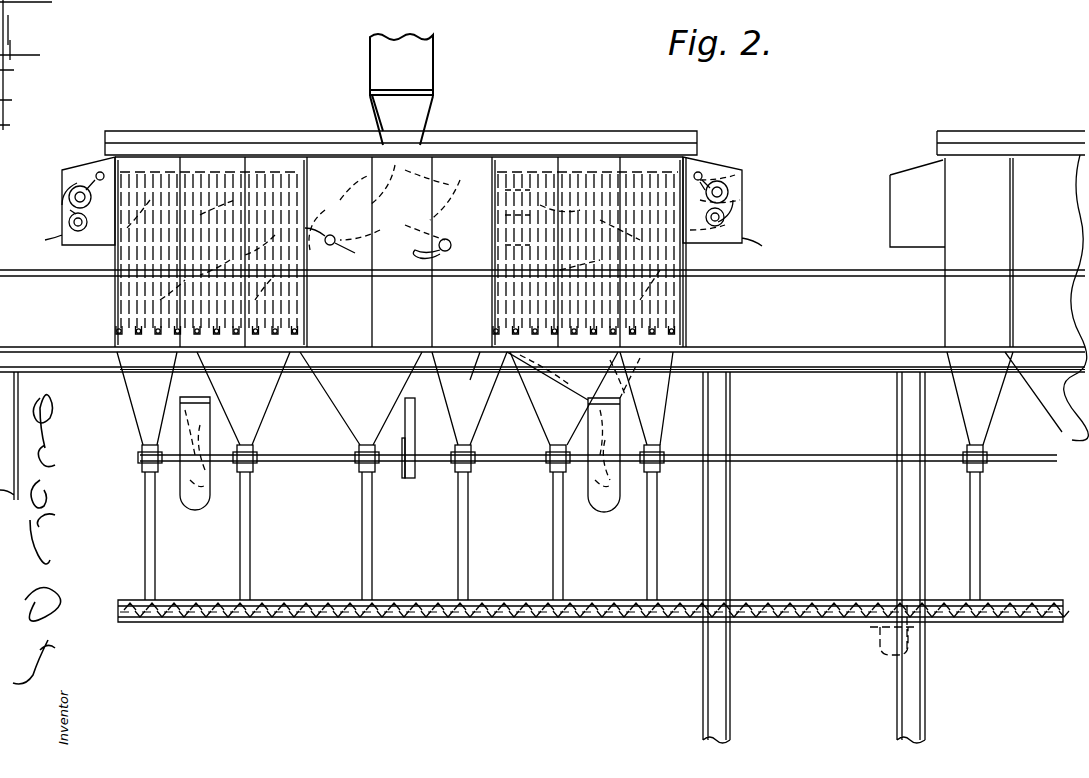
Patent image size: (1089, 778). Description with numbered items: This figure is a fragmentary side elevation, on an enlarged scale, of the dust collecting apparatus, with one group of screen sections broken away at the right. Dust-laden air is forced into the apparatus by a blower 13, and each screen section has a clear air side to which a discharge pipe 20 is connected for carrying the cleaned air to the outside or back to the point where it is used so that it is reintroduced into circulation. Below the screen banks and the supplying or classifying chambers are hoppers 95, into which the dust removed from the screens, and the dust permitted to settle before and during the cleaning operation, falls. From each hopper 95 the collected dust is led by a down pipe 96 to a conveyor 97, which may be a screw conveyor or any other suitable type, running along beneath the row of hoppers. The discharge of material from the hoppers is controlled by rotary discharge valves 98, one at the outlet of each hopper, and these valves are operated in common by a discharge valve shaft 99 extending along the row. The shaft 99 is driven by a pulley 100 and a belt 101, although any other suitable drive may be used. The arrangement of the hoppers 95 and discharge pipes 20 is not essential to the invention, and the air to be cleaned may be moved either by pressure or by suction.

The blower 13 is at (684, 285).
The discharge pipe 20 is at (188, 413).
The hopper 95 is at (175, 398).
The down pipe 96 is at (143, 523).
The conveyor 97 is at (365, 621).
The rotary discharge valve 98 is at (255, 447).
The discharge valve shaft 99 is at (308, 455).
The pulley 100 is at (420, 433).
The belt 101 is at (420, 370).